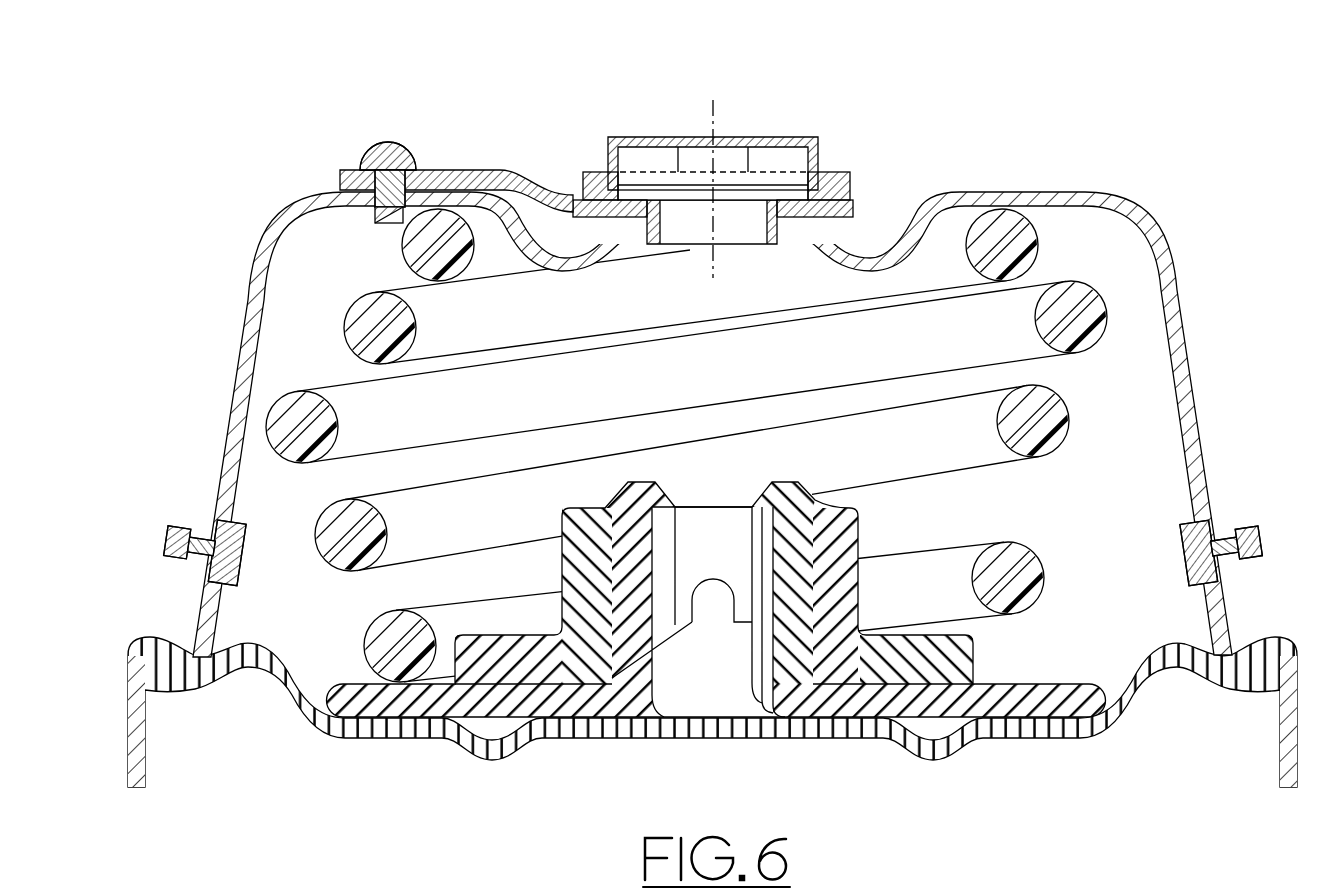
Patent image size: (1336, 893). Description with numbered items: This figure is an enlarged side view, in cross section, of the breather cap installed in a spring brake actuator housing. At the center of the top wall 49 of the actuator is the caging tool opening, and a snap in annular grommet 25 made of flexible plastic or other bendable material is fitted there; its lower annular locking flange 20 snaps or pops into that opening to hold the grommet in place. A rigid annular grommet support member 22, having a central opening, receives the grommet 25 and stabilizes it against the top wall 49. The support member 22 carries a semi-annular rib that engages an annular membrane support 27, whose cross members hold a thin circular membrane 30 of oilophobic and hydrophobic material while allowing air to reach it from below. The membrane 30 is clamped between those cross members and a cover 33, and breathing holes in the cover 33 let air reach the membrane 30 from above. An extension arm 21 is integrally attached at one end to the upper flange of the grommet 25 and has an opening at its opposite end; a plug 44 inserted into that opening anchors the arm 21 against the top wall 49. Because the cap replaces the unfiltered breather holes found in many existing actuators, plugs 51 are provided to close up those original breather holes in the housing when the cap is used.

The lower annular locking flange 20 is at (658, 222).
The extension arm 21 is at (488, 176).
The rigid annular grommet support member 22 is at (852, 207).
The snap in annular grommet 25 is at (672, 222).
The annular membrane support 27 is at (833, 181).
The thin circular membrane 30 is at (767, 185).
The cover 33 is at (733, 137).
The plug 44 is at (381, 146).
The top wall 49 is at (343, 200).
The plugs 51 is at (165, 540).